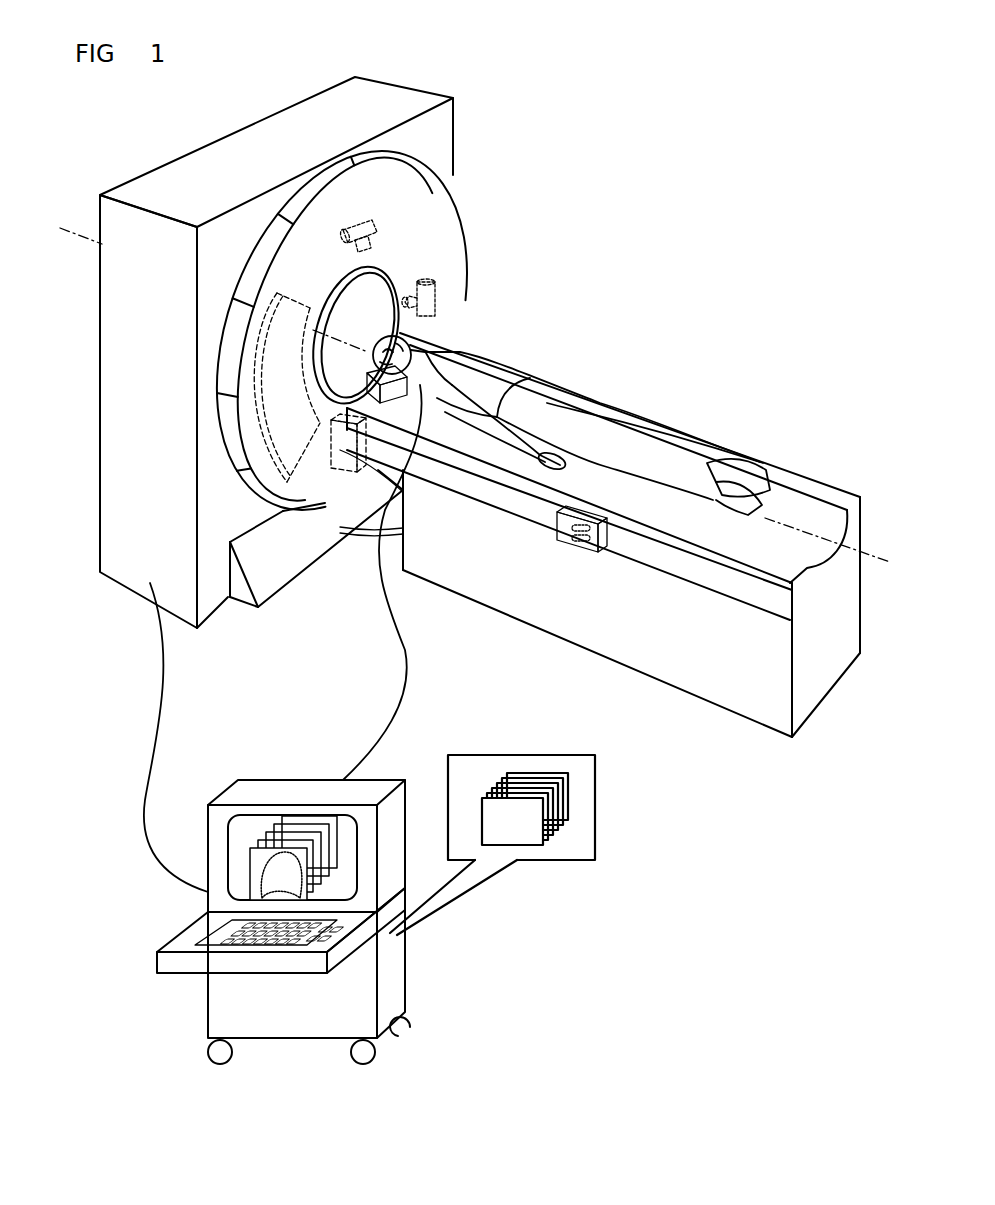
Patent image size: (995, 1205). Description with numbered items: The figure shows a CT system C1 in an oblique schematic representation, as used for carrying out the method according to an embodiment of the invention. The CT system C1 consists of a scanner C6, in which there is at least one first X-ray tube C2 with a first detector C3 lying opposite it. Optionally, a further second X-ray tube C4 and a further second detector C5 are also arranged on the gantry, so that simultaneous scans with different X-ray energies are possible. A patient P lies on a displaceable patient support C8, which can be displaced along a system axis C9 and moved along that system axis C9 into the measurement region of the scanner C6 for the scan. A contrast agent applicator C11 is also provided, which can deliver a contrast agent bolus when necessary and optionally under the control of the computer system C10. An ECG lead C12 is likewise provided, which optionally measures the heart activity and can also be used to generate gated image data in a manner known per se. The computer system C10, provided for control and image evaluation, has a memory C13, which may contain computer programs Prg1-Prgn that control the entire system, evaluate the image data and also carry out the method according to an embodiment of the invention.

The CT system C1 is at (636, 260).
The first X-ray tube C2 is at (375, 226).
The first detector C3 is at (343, 453).
The second X-ray tube C4 is at (436, 296).
The second detector C5 is at (290, 453).
The scanner C6 is at (150, 582).
The displaceable patient support C8 is at (748, 683).
The system axis C9 is at (883, 558).
The computer system for control and image evaluation C10 is at (397, 978).
The contrast agent applicator C11 is at (572, 535).
The ECG lead C12 is at (403, 688).
The memory C13 is at (598, 770).
The patient P is at (489, 385).
The computer programs Prg1-Prgn is at (528, 845).